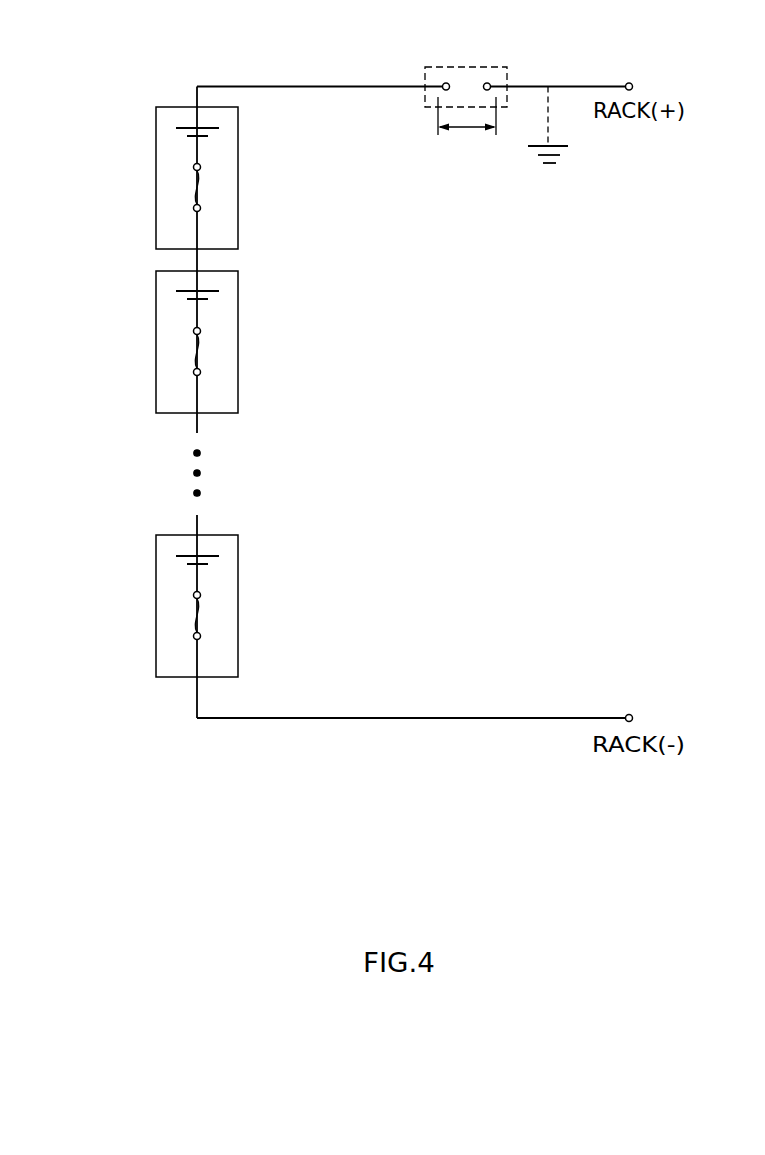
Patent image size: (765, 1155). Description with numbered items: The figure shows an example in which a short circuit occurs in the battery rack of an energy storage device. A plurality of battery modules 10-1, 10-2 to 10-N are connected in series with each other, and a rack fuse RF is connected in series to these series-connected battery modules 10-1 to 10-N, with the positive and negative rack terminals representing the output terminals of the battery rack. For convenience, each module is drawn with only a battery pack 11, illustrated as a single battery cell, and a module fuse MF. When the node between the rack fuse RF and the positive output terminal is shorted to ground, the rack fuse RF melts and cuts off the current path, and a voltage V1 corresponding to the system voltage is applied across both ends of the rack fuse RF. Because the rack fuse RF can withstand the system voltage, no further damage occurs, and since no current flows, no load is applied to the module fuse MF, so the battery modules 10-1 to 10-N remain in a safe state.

The battery module 10-1 is at (149, 178).
The battery module 10-2 is at (156, 340).
The battery module 10-N is at (156, 604).
The battery pack 11 is at (176, 133).
The module fuse MF is at (214, 188).
The rack fuse RF is at (465, 66).
The voltage V1 is at (467, 128).